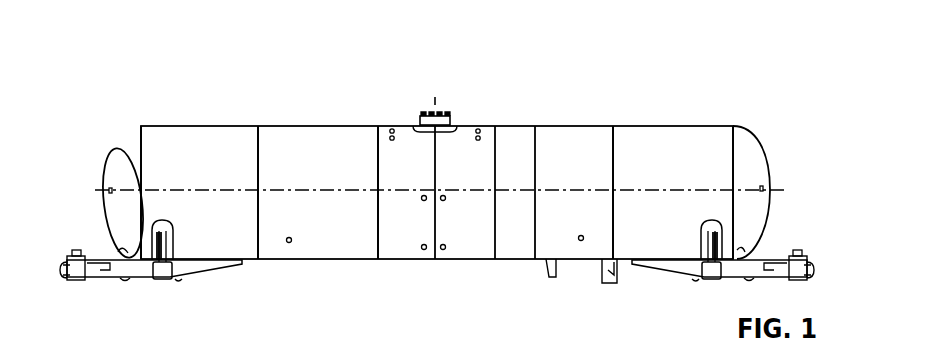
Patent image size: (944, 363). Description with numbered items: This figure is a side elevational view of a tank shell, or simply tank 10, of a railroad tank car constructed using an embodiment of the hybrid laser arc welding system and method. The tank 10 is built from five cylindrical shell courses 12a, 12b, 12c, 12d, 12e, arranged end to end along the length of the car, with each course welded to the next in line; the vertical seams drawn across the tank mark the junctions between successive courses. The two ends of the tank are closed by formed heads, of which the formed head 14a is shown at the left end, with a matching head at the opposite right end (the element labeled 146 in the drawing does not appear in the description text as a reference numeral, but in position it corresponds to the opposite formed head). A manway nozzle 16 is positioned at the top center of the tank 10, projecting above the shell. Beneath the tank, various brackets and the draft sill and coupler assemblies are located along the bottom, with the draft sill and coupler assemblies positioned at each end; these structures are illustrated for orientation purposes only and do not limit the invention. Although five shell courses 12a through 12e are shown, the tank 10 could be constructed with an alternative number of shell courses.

The tank shell 10 is at (258, 76).
The shell course 12a is at (179, 178).
The shell course 12b is at (305, 178).
The shell course 12c is at (385, 178).
The shell course 12d is at (553, 178).
The shell course 12e is at (650, 178).
The formed head 14a is at (112, 165).
The right tank head 146 is at (768, 213).
The manway nozzle 16 is at (455, 122).